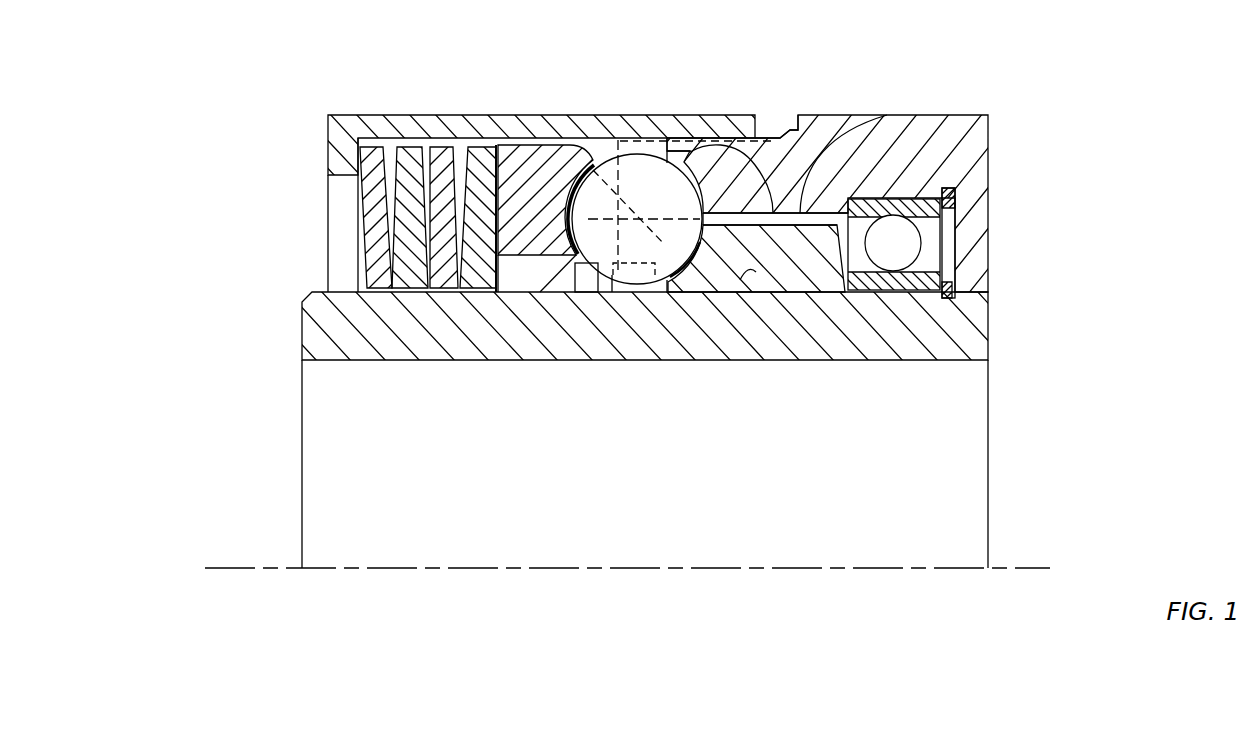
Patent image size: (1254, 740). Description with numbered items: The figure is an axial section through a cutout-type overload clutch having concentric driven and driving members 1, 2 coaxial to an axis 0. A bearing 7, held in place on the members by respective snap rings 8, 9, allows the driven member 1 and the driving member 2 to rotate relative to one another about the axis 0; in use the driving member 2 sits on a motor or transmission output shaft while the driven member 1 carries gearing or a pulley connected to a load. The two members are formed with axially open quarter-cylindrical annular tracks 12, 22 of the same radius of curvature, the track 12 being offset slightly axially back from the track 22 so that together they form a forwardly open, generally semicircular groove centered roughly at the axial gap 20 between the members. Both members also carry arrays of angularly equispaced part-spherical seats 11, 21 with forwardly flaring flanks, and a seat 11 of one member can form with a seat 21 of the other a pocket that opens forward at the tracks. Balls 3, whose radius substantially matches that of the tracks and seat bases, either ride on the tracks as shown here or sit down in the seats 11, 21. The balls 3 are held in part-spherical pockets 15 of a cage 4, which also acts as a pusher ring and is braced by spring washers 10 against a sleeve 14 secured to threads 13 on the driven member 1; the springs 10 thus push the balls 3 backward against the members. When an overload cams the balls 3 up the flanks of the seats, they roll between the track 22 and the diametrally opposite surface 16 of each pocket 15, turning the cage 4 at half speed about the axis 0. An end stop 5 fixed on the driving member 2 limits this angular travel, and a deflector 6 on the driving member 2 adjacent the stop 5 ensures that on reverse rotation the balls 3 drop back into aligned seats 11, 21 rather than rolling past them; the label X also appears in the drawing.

The axis 0 is at (628, 570).
The driven member 1 is at (987, 117).
The driving member 2 is at (925, 343).
The balls 3 is at (646, 180).
The cage 4 is at (535, 178).
The end stop 5 is at (650, 287).
The deflector 6 is at (570, 292).
The bearing 7 is at (902, 245).
The snap ring 8 is at (950, 205).
The snap ring 9 is at (950, 292).
The spring washers 10 is at (478, 170).
The seats 11 is at (737, 178).
The track 12 is at (690, 175).
The threads 13 is at (783, 126).
The sleeve 14 is at (336, 143).
The pockets 15 is at (619, 140).
The surface 16 is at (585, 190).
The gap 20 is at (880, 115).
The seats 21 is at (767, 235).
The track 22 is at (673, 252).
The axis X is at (572, 258).